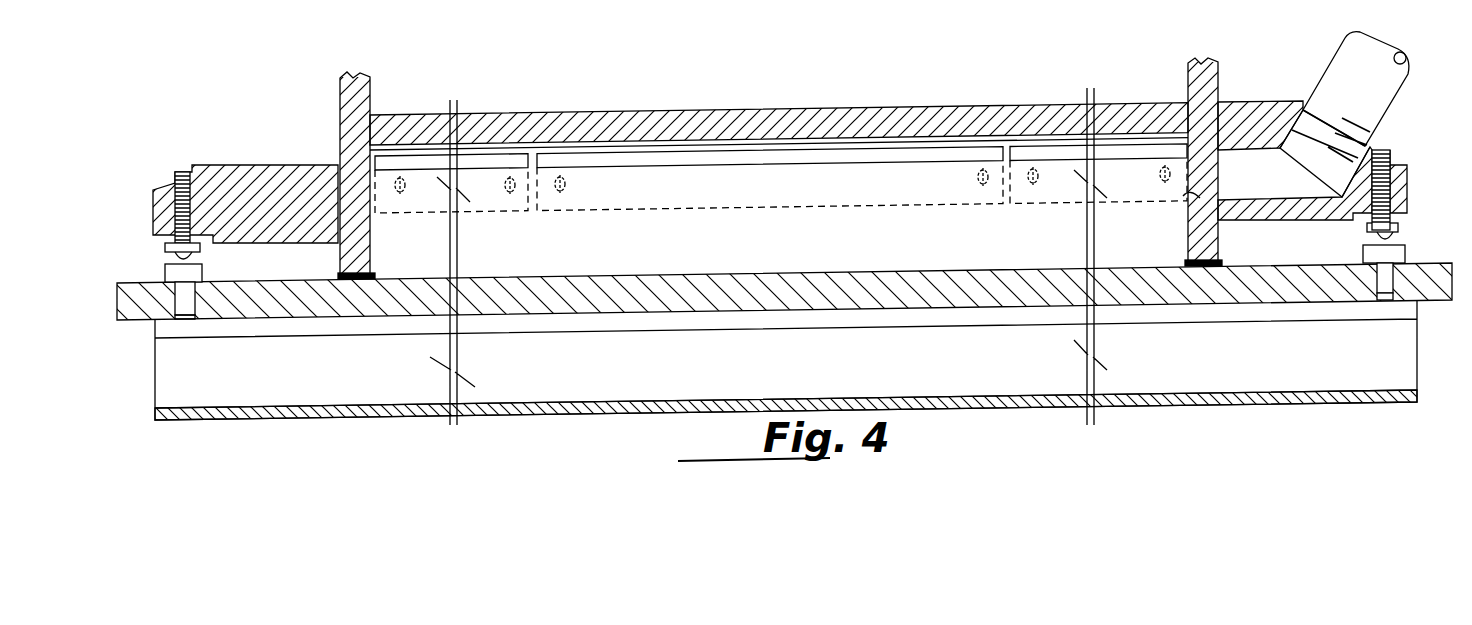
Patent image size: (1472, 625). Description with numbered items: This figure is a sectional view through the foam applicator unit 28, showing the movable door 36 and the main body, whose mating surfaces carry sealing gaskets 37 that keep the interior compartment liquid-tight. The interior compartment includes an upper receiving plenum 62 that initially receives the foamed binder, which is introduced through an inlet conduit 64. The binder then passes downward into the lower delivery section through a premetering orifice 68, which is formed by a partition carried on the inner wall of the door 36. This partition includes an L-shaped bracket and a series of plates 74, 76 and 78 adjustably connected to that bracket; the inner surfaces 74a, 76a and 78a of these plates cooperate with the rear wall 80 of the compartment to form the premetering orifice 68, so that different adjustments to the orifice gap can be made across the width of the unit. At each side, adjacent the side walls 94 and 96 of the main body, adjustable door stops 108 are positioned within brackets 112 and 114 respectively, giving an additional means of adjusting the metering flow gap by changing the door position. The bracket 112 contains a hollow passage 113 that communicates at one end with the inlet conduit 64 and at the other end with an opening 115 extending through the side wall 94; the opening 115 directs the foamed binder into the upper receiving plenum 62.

The applicator unit 28 is at (1421, 250).
The door 36 is at (893, 303).
The sealing gaskets 37 is at (382, 271).
The upper receiving plenum 62 is at (808, 252).
The inlet conduit 64 is at (1348, 72).
The premetering orifice 68 is at (797, 133).
The adjustable plate 74 is at (500, 160).
The inner surface of adjustable plate 74a is at (498, 156).
The adjustable plate 76 is at (612, 157).
The inner surface of adjustable plate 76a is at (743, 148).
The adjustable plate 78 is at (1035, 151).
The inner surface of adjustable plate 78a is at (1062, 147).
The rear wall 80 is at (903, 140).
The side wall 94 is at (1222, 232).
The side wall 96 is at (340, 248).
The adjustable door stops 108 is at (202, 248).
The bracket 112 is at (1395, 165).
The hollow passage 113 is at (1252, 165).
The bracket 114 is at (203, 168).
The opening 115 is at (1184, 196).